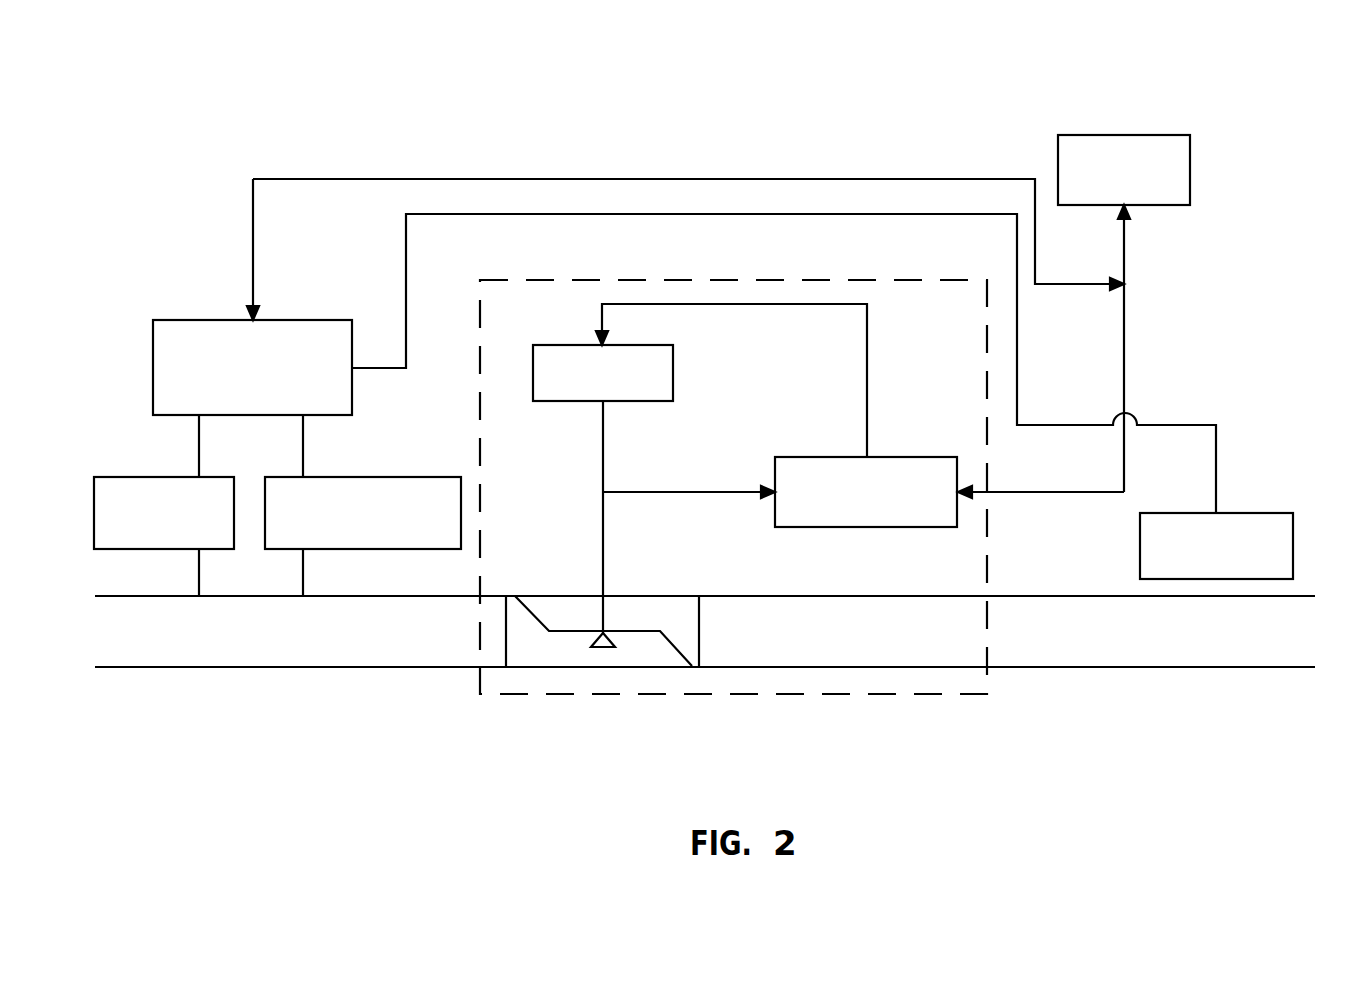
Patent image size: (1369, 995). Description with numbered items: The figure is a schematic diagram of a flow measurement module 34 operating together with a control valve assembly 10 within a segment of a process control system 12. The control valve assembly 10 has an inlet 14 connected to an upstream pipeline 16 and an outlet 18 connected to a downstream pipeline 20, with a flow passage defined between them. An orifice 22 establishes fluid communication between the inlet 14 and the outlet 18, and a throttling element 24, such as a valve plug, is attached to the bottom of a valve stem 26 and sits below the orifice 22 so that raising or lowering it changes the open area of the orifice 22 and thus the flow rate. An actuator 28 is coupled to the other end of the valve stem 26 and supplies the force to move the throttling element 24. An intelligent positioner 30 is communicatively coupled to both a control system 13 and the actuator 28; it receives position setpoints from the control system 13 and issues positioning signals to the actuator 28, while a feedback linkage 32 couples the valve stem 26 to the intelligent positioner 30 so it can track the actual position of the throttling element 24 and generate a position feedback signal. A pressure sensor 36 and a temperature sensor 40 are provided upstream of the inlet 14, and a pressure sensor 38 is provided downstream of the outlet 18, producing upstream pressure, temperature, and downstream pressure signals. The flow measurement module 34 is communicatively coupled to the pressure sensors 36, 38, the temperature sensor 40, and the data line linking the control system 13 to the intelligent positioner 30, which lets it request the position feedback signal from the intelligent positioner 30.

The control valve assembly 10 is at (831, 278).
The process control system 12 is at (176, 273).
The control system 13 is at (1190, 134).
The inlet 14 is at (505, 640).
The upstream pipeline 16 is at (250, 658).
The outlet 18 is at (700, 648).
The downstream pipeline 20 is at (1092, 648).
The orifice 22 is at (605, 633).
The throttling element 24 is at (600, 648).
The valve stem 26 is at (603, 430).
The actuator 28 is at (673, 372).
The intelligent positioner 30 is at (958, 478).
The feedback linkage 32 is at (696, 491).
The flow measurement module 34 is at (298, 319).
The pressure sensor 36 is at (118, 477).
The pressure sensor 38 is at (1293, 545).
The temperature sensor 40 is at (404, 477).